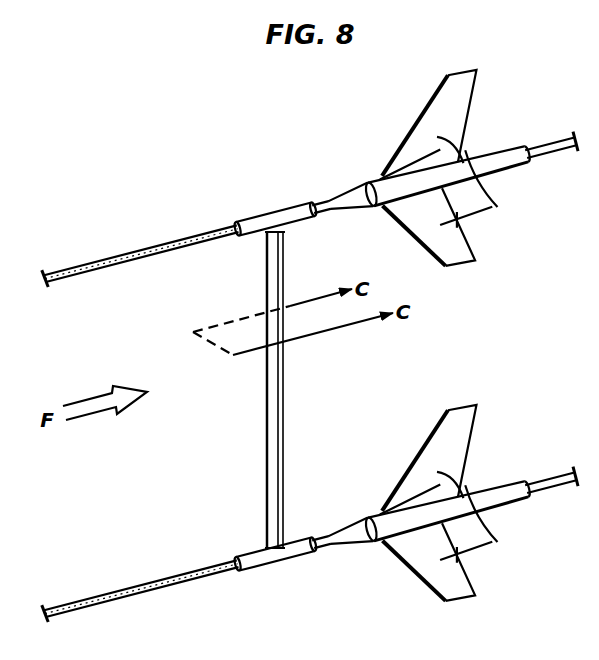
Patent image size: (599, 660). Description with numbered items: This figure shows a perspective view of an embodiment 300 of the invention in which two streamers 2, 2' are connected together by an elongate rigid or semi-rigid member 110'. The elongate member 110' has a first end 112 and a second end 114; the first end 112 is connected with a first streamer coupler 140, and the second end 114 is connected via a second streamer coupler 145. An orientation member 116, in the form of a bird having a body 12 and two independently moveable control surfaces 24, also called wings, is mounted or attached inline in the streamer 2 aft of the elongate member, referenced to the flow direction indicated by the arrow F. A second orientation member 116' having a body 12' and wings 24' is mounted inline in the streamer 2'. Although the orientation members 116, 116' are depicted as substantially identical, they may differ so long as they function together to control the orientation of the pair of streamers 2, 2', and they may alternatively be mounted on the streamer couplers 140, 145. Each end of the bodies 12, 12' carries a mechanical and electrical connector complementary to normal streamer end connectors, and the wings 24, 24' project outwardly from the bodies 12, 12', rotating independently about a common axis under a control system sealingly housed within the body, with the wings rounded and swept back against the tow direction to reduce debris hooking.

The streamer 2 is at (310, 187).
The streamer 2' is at (310, 522).
The body 12 is at (445, 145).
The body 12' is at (445, 480).
The control surfaces 24 is at (455, 212).
The control surfaces 24' is at (459, 547).
The orientation member 116 is at (426, 124).
The orientation member 116' is at (426, 459).
The first streamer coupler 140 is at (273, 213).
The second streamer coupler 145 is at (272, 566).
The elongate rigid or semi-rigid member 110' is at (232, 390).
The first end 112 is at (272, 252).
The second end 114 is at (267, 545).
The embodiment 300 is at (226, 176).